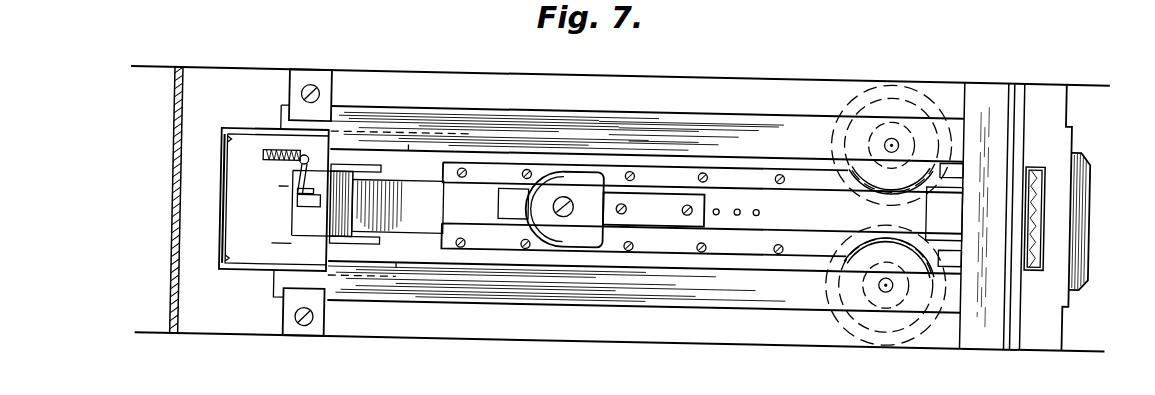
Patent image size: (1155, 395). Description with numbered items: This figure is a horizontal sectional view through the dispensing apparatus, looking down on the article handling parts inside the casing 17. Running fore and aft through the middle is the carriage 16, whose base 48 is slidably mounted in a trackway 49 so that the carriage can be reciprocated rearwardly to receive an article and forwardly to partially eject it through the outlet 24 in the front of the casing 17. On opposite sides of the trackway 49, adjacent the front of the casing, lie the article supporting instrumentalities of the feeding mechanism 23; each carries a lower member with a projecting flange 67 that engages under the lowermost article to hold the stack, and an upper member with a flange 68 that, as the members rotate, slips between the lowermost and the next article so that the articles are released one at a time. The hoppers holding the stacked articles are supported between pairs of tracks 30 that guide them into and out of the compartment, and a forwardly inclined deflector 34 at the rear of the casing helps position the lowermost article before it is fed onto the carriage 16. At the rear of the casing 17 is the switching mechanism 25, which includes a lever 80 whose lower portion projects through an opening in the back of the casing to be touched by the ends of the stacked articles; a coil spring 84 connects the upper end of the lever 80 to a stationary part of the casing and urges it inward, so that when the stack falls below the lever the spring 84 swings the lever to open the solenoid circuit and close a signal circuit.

The casing 17 is at (175, 138).
The switching mechanism 25 is at (254, 201).
The coil spring 84 is at (278, 160).
The lever 80 is at (300, 201).
The deflector 34 is at (352, 189).
The tracks 30 is at (667, 107).
The trackway 49 is at (717, 231).
The carriage 16 is at (582, 220).
The base 48 is at (760, 211).
The feeding mechanism 23 is at (879, 160).
The flange 67 is at (890, 185).
The flange 68 is at (923, 177).
The outlet 24 is at (1084, 169).